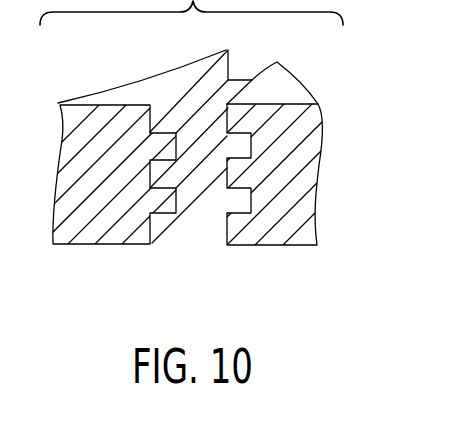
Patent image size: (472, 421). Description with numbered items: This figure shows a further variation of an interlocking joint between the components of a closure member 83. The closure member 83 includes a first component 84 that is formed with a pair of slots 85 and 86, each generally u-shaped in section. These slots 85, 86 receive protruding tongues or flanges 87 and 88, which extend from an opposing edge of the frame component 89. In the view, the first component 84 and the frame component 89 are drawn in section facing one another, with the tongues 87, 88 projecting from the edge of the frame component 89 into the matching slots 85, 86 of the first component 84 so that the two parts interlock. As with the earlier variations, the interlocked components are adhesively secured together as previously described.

The closure member 83 is at (163, 255).
The first component 84 is at (274, 238).
The slot 85 is at (252, 140).
The slot 86 is at (251, 203).
The protruding tongue 87 is at (187, 113).
The protruding tongue 88 is at (168, 183).
The frame component 89 is at (100, 90).